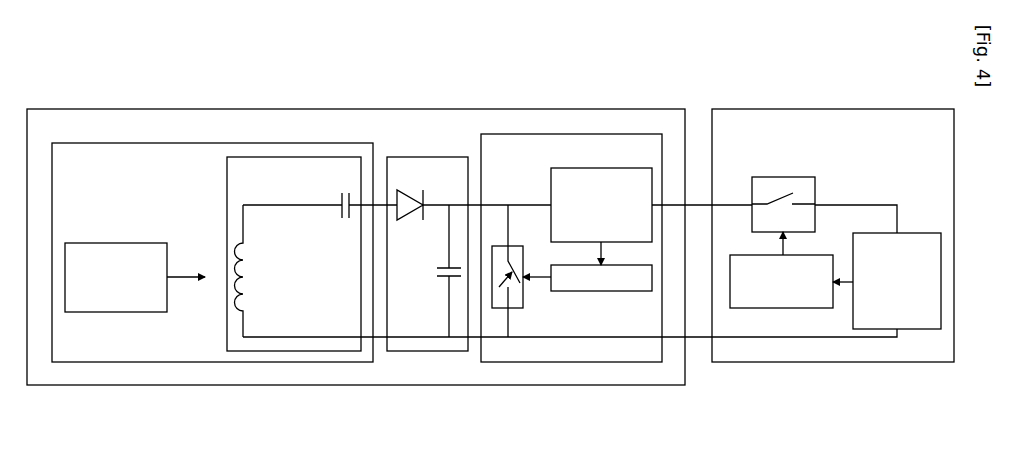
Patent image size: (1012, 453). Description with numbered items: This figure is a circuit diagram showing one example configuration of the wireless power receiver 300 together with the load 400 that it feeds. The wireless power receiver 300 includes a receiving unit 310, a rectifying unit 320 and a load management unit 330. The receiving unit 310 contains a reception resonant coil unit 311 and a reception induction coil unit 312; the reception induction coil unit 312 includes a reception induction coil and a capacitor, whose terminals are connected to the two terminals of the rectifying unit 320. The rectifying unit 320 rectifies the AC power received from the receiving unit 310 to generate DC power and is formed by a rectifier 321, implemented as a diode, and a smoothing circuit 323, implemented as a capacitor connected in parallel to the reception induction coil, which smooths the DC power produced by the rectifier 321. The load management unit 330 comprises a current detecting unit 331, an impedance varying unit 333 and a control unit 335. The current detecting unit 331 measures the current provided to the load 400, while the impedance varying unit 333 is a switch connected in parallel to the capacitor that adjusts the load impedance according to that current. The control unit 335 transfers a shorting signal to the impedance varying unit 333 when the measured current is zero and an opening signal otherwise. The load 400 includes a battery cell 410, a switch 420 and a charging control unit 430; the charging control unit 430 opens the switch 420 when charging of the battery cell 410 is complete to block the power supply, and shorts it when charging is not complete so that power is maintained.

The wireless power receiver 300 is at (357, 109).
The receiving unit 310 is at (213, 143).
The reception resonant coil unit 311 is at (117, 243).
The reception induction coil unit 312 is at (296, 157).
The rectifying unit 320 is at (428, 157).
The rectifier 321 is at (405, 222).
The smoothing circuit 323 is at (445, 280).
The load management unit 330 is at (572, 134).
The current detecting unit 331 is at (605, 168).
The impedance varying unit 333 is at (518, 246).
The control unit 335 is at (603, 292).
The load 400 is at (833, 109).
The battery cell 410 is at (913, 330).
The switch 420 is at (783, 177).
The charging control unit 430 is at (787, 310).